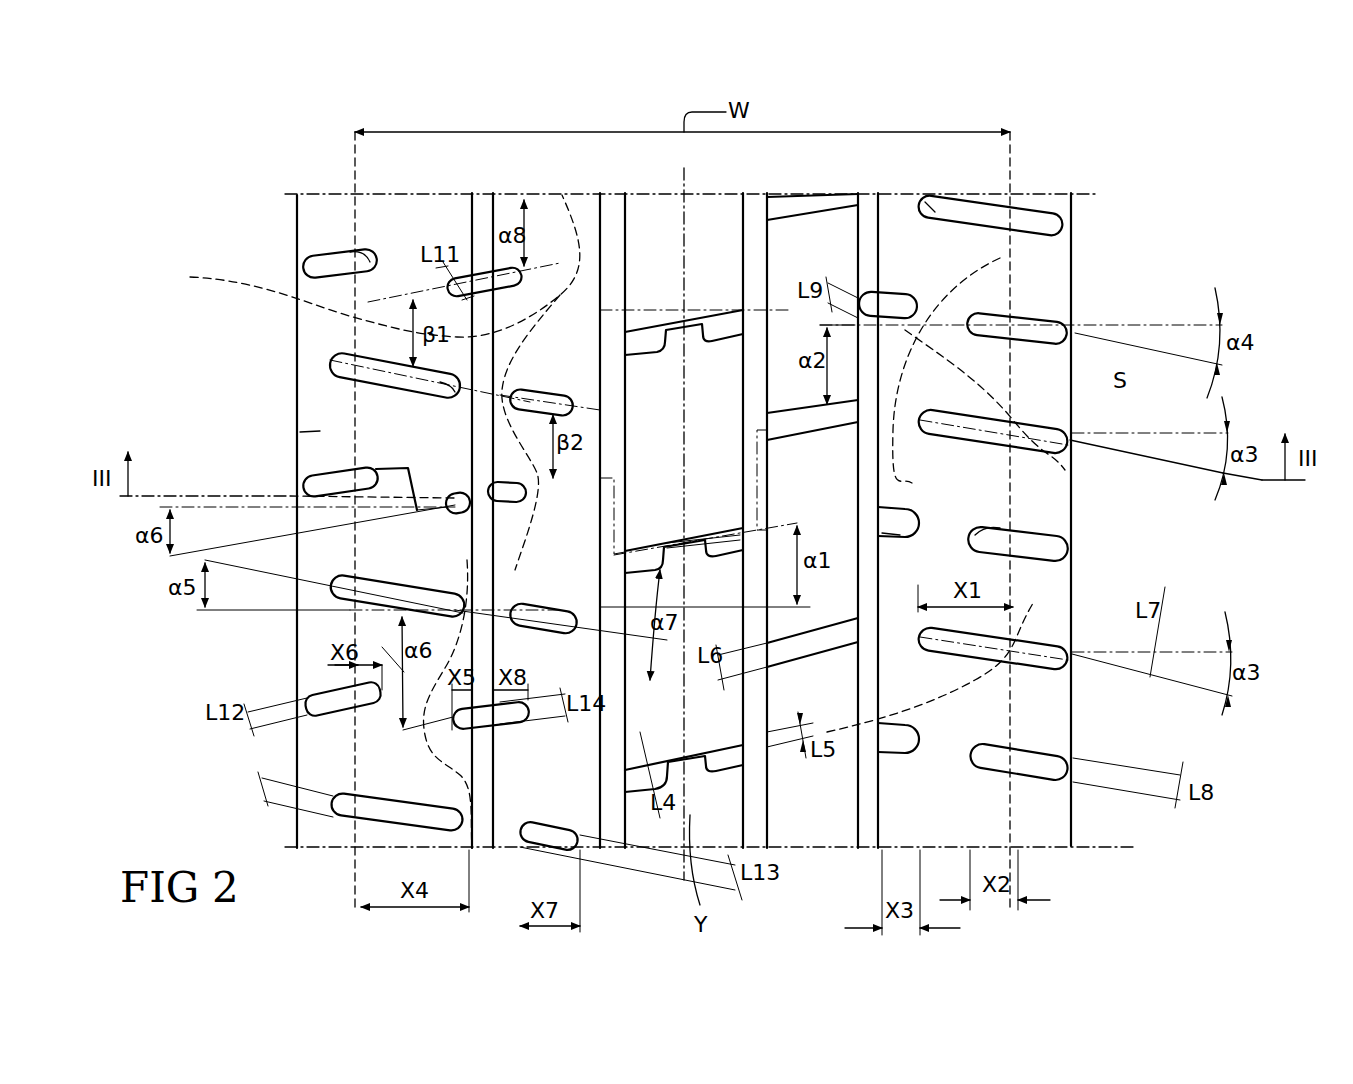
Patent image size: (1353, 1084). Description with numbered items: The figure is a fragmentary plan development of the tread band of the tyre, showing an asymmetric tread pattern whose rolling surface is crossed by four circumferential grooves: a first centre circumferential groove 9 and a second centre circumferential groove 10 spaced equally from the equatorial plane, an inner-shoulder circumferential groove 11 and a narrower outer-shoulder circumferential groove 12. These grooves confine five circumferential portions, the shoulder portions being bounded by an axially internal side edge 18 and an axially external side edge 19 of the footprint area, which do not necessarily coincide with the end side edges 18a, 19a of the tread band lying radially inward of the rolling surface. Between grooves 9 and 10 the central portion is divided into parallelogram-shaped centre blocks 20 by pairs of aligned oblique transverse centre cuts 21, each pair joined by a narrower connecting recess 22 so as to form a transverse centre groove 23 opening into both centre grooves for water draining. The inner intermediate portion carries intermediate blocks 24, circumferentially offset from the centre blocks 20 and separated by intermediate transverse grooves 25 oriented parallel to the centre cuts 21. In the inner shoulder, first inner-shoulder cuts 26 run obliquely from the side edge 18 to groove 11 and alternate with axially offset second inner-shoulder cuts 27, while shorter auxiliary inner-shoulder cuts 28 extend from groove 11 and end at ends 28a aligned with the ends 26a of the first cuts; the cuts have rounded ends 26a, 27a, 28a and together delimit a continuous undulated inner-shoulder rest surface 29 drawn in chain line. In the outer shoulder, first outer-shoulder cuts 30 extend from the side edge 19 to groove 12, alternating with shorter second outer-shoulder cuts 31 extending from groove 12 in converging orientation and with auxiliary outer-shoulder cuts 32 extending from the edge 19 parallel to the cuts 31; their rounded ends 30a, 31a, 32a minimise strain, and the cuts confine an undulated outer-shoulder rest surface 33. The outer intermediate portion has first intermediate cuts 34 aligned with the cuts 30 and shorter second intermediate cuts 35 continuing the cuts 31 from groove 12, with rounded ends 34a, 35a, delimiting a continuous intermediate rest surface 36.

The first centre circumferential groove 9 is at (612, 210).
The second centre circumferential groove 10 is at (755, 205).
The inner-shoulder circumferential groove 11 is at (866, 205).
The outer-shoulder circumferential groove 12 is at (480, 200).
The axially internal side edge 18 is at (935, 295).
The end side edge 18a is at (1071, 212).
The axially external side edge 19 is at (200, 278).
The end side edge 19a is at (297, 223).
The centre block 20 is at (710, 227).
The transverse centre cut 21 is at (650, 333).
The connecting recess 22 is at (675, 330).
The transverse centre groove 23 is at (720, 540).
The intermediate block 24 is at (808, 242).
The intermediate transverse groove 25 is at (827, 640).
The first inner-shoulder cut 26 is at (988, 200).
The end of first inner-shoulder cut 26a is at (930, 212).
The second inner-shoulder cut 27 is at (1030, 548).
The end of second inner-shoulder cut 27a is at (980, 530).
The auxiliary inner-shoulder cut 28 is at (895, 510).
The end of auxiliary inner-shoulder cut 28a is at (913, 533).
The inner-shoulder rest surface 29 is at (940, 283).
The first outer-shoulder cut 30 is at (395, 360).
The end of first outer-shoulder cut 30a is at (456, 392).
The second outer-shoulder cut 31 is at (470, 513).
The end of second outer-shoulder cut 31a is at (448, 512).
The auxiliary outer-shoulder cut 32 is at (335, 258).
The end of auxiliary outer-shoulder cut 32a is at (368, 258).
The outer-shoulder rest surface 33 is at (468, 830).
The first intermediate cut 34 is at (555, 608).
The end of first intermediate cut 34a is at (508, 500).
The second intermediate cut 35 is at (506, 518).
The end of second intermediate cut 35a is at (497, 515).
The intermediate rest surface 36 is at (562, 193).